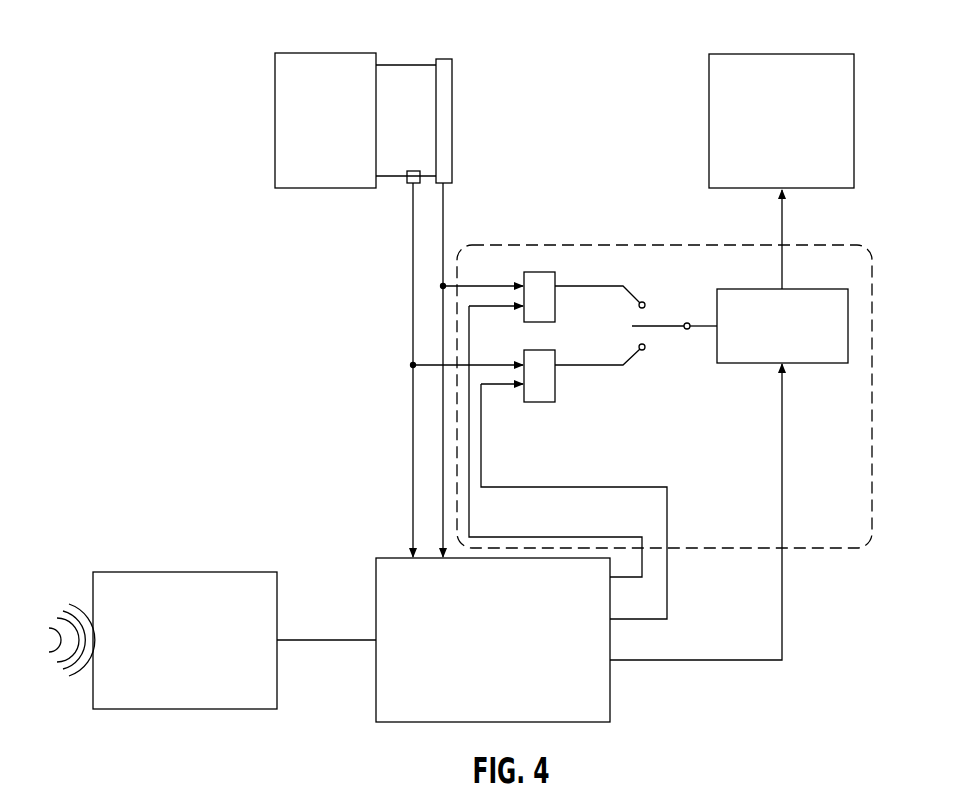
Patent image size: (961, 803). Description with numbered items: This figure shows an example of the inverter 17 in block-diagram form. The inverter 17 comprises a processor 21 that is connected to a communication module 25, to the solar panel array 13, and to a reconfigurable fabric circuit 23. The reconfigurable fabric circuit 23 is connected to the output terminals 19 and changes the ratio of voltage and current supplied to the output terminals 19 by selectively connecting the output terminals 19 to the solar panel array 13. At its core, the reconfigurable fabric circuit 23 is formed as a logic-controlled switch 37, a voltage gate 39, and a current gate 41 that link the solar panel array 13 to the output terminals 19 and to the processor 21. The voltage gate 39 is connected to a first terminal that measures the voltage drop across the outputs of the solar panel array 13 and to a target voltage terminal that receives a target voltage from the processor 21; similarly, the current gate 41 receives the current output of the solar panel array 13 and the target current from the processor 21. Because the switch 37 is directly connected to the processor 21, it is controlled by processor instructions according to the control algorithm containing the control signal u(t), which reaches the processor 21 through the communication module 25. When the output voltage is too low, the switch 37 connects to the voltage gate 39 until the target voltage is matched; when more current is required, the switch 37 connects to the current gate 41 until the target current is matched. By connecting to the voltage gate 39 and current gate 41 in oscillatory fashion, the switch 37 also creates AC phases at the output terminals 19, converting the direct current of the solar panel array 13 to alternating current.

The inverter 17 is at (188, 58).
The solar panel array 13 is at (322, 53).
The output terminals 19 is at (812, 54).
The processor 21 is at (392, 558).
The reconfigurable fabric circuit 23 is at (872, 400).
The communication module 25 is at (147, 572).
The logic-controlled switch 37 is at (848, 332).
The voltage gate 39 is at (531, 272).
The current gate 41 is at (557, 400).